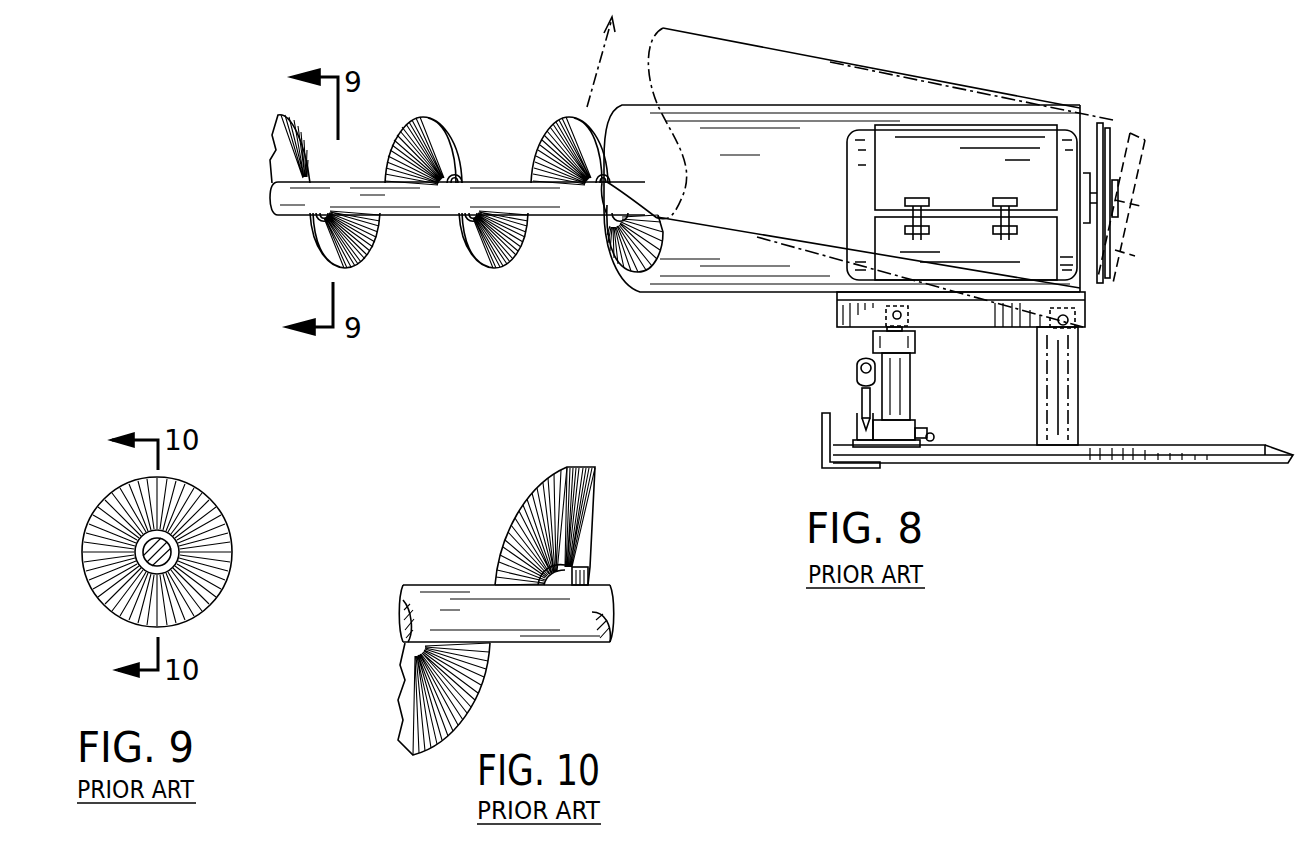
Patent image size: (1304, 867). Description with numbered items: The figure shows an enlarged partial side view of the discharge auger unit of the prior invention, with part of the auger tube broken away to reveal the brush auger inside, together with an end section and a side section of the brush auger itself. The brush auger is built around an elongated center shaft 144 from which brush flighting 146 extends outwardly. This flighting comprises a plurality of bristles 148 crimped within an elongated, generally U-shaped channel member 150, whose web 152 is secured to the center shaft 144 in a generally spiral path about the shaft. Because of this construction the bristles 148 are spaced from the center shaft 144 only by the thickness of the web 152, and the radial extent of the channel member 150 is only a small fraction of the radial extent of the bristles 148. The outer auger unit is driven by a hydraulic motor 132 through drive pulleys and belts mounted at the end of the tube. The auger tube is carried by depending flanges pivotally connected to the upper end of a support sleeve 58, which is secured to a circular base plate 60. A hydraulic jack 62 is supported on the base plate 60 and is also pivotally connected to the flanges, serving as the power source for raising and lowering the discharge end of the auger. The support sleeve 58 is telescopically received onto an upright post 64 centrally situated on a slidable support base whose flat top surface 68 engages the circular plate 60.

In FIG. 8, the center shaft 144 is at (429, 205).
In FIG. 9, the center shaft 144 is at (88, 581).
In FIG. 10, the center shaft 144 is at (523, 617).
In FIG. 8, the brush flighting 146 is at (430, 120).
In FIG. 9, the brush flighting 146 is at (222, 498).
In FIG. 10, the brush flighting 146 is at (528, 472).
In FIG. 8, the bristles 148 is at (425, 150).
In FIG. 9, the bristles 148 is at (184, 533).
In FIG. 10, the bristles 148 is at (557, 510).
In FIG. 8, the channel member 150 is at (470, 210).
In FIG. 9, the channel member 150 is at (183, 617).
In FIG. 10, the channel member 150 is at (592, 558).
In FIG. 10, the web 152 is at (578, 600).
In FIG. 8, the hydraulic motor 132 is at (1073, 163).
In FIG. 8, the support sleeve 58 is at (1080, 368).
In FIG. 8, the circular base plate 60 is at (1152, 443).
In FIG. 8, the hydraulic jack 62 is at (905, 395).
In FIG. 8, the upright post 64 is at (1050, 403).
In FIG. 8, the flat top surface 68 is at (1278, 450).